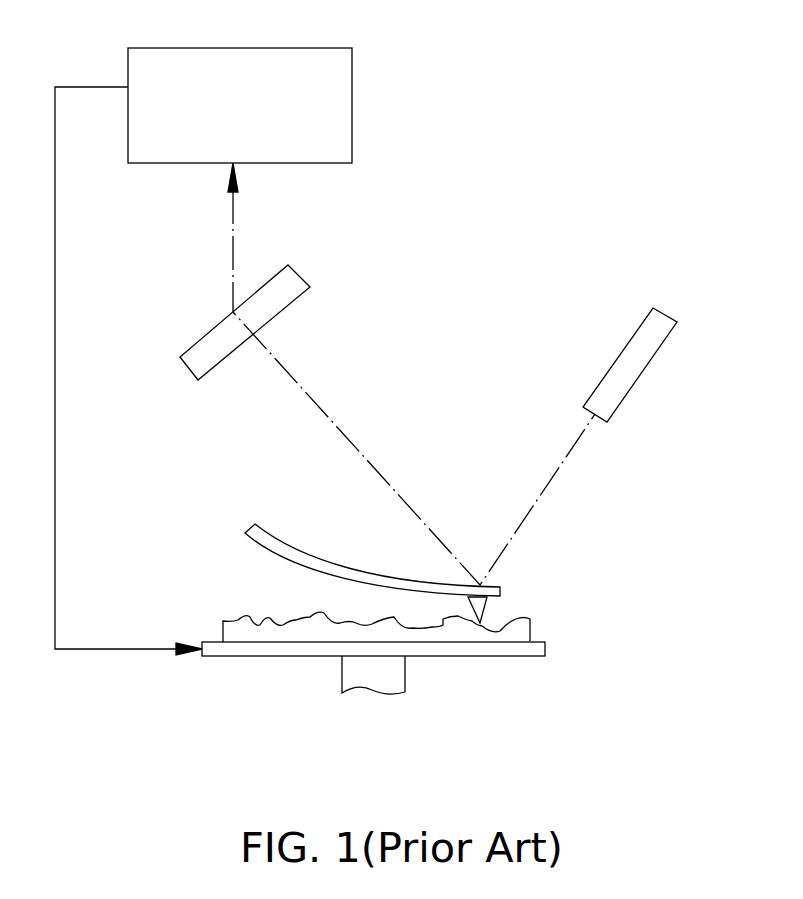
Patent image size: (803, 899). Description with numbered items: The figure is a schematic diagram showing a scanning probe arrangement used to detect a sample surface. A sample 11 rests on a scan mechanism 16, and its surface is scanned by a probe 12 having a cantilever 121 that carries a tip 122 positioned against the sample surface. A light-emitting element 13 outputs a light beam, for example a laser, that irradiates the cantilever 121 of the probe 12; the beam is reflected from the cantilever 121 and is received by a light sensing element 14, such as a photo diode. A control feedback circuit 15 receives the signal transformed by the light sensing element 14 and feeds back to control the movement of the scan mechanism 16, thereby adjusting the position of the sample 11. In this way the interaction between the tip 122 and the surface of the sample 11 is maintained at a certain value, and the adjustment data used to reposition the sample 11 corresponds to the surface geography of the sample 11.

The sample 11 is at (240, 633).
The probe 12 is at (434, 565).
The cantilever 121 is at (388, 586).
The tip 122 is at (478, 608).
The light-emitting element 13 is at (663, 325).
The light sensing element 14 is at (221, 338).
The control feedback circuit 15 is at (333, 89).
The scan mechanism 16 is at (533, 647).